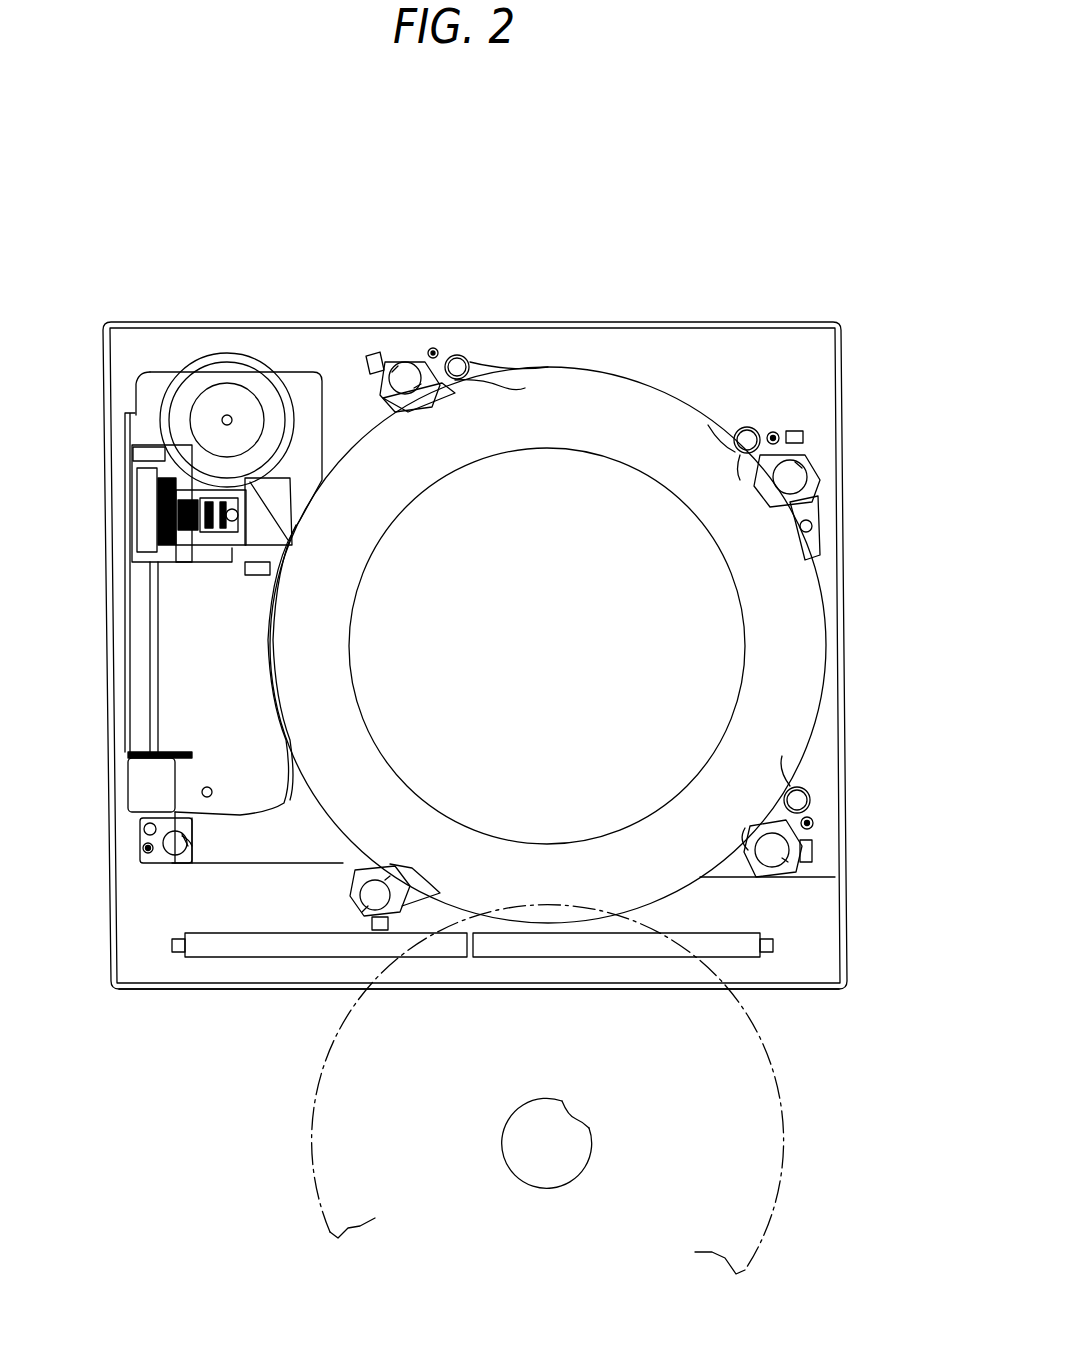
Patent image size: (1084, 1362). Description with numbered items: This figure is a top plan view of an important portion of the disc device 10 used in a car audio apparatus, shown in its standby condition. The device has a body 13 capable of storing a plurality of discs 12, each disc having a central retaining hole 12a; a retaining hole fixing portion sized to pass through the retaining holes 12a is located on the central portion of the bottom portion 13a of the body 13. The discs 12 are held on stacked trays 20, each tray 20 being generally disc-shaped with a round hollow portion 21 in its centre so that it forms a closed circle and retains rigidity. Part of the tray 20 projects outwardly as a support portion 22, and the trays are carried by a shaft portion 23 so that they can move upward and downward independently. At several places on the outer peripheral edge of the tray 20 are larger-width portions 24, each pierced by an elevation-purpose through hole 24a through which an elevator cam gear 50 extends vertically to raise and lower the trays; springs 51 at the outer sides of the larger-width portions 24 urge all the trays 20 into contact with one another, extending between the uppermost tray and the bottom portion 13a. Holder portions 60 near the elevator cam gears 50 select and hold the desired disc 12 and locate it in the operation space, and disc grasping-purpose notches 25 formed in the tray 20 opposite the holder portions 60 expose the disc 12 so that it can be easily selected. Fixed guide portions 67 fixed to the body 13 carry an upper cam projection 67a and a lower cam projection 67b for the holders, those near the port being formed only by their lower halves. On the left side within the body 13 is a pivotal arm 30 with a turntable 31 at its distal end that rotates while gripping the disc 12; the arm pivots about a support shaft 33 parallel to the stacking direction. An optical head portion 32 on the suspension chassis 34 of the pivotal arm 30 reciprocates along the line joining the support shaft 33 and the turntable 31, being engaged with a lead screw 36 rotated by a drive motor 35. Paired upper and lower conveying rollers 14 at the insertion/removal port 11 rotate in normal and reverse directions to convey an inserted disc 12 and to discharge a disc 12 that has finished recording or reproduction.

The disc device 10 is at (340, 200).
The insertion/removal port 11 is at (665, 990).
The disc 12 is at (790, 1128).
The retaining hole 12a is at (580, 1118).
The body 13 is at (805, 993).
The bottom portion of the body 13a is at (820, 948).
The conveying rollers 14 is at (560, 952).
The tray 20 is at (645, 372).
The round hollow portion 21 is at (427, 800).
The support portion 22 is at (245, 865).
The shaft portion 23 is at (146, 828).
The larger-width portion 24 is at (470, 365).
The elevation-purpose through hole 24a is at (470, 380).
The disc grasping-purpose notch 25 is at (420, 404).
The pivotal arm 30 is at (273, 338).
The turntable 31 is at (220, 370).
The optical head portion 32 is at (228, 575).
The support shaft 33 is at (212, 788).
The suspension chassis 34 is at (233, 657).
The drive motor 35 is at (140, 778).
The lead screw 36 is at (148, 662).
The elevator cam gear 50 is at (458, 355).
The spring 51 is at (433, 347).
The holder portion 60 is at (410, 425).
The fixed guide portion 67 is at (370, 370).
The upper cam projection 67a is at (388, 350).
The lower cam projection 67b is at (370, 922).